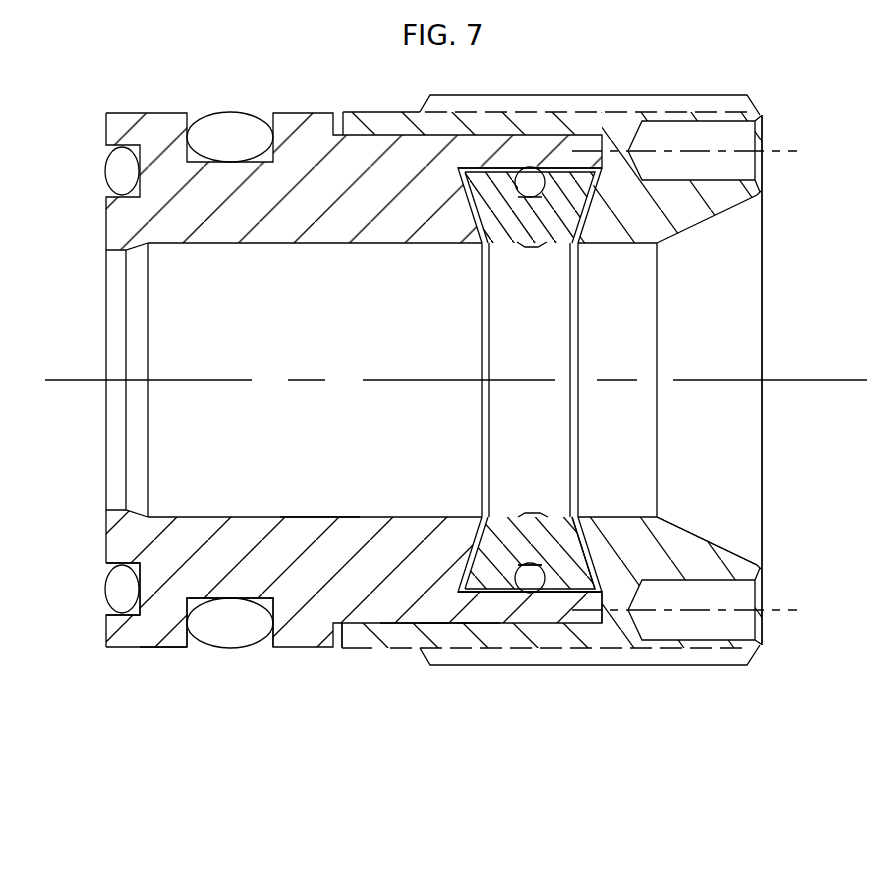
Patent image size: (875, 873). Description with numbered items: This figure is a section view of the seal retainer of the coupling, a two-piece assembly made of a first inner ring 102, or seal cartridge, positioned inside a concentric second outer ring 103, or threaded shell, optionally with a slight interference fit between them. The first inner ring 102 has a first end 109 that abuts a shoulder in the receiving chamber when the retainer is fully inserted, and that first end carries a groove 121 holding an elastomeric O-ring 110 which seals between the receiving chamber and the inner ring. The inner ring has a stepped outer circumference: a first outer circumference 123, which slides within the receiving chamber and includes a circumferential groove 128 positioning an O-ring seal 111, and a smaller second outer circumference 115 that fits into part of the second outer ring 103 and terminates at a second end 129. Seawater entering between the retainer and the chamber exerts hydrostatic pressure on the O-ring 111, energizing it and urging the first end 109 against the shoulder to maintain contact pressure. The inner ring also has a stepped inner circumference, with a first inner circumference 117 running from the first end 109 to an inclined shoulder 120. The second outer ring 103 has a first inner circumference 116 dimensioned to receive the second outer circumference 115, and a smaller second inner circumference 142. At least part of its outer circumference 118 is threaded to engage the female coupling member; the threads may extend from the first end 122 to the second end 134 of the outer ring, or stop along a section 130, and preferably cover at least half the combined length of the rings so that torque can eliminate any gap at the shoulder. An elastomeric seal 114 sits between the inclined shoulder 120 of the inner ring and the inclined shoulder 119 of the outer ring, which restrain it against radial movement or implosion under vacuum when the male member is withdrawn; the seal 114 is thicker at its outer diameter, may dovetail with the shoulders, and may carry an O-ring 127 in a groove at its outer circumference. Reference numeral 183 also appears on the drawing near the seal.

The first inner ring 102 is at (280, 565).
The second outer ring 103 is at (658, 567).
The first end 109 is at (107, 549).
The elastomeric O-ring 110 is at (123, 590).
The O-ring seal 111 is at (242, 635).
The elastomeric seal 114 is at (583, 548).
The second outer circumference 115 is at (440, 624).
The first inner circumference 116 is at (411, 624).
The first inner circumference 117 is at (306, 516).
The outer circumference 118 is at (733, 665).
The inclined shoulder 119 is at (590, 568).
The inclined shoulder 120 is at (468, 568).
The groove 121 is at (133, 614).
The first end 122 is at (623, 517).
The first outer circumference 123 is at (172, 648).
The O-ring 127 is at (531, 580).
The circumferential groove 128 is at (195, 600).
The second end 129 is at (603, 583).
The section 130 is at (473, 643).
The second end 134 is at (342, 636).
The second inner circumference 142 is at (760, 575).
The seal lip 183 is at (561, 592).